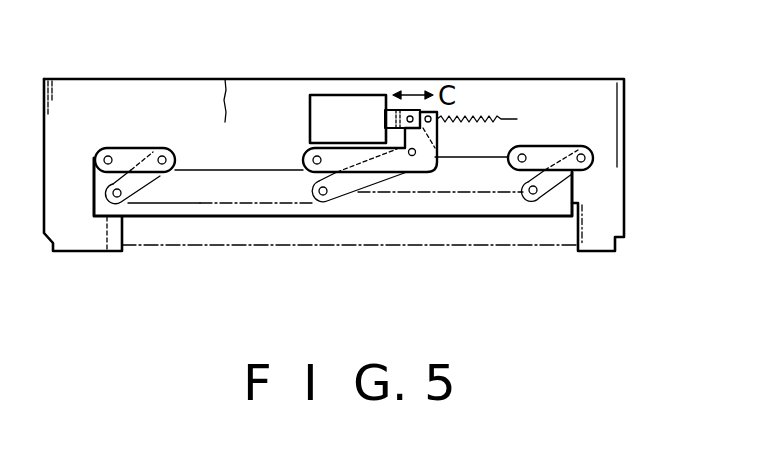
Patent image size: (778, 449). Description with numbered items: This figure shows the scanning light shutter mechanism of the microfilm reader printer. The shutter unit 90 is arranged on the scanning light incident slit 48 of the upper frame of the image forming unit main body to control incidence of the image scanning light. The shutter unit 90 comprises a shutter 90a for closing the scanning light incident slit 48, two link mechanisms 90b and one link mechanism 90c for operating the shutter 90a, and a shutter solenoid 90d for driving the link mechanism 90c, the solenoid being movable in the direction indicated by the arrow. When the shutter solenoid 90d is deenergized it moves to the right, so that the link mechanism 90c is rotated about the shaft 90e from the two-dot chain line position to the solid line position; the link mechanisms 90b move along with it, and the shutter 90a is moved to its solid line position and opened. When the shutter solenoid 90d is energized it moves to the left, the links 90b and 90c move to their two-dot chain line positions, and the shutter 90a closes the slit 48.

The shutter unit 90 is at (198, 79).
The shutter 90a is at (573, 189).
The link mechanisms 90b is at (137, 152).
The link mechanism 90c is at (436, 136).
The shutter solenoid 90d is at (352, 106).
The shaft 90e is at (414, 156).
The scanning light incident slit 48 is at (285, 237).